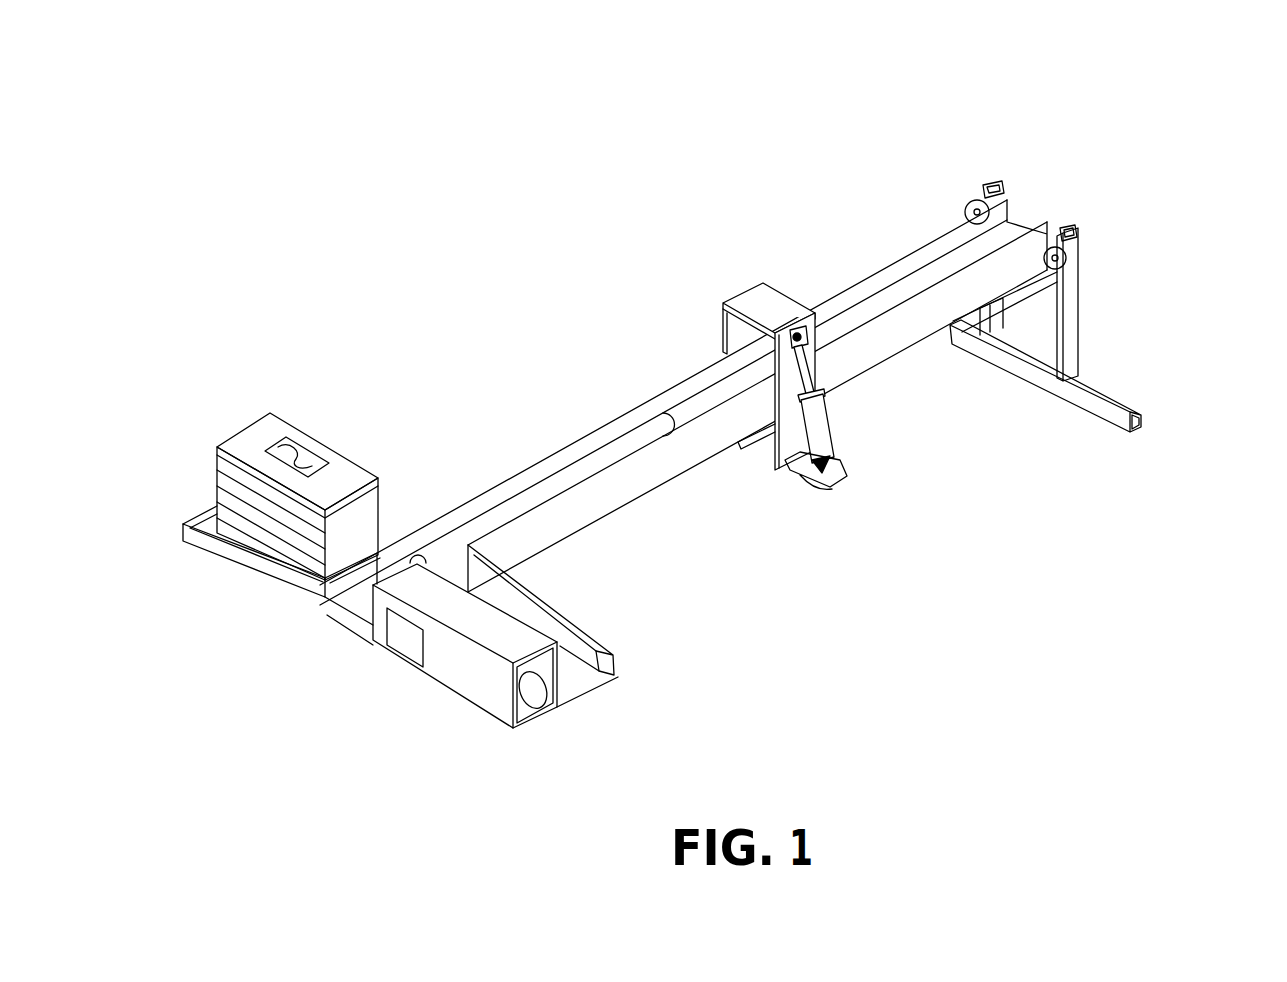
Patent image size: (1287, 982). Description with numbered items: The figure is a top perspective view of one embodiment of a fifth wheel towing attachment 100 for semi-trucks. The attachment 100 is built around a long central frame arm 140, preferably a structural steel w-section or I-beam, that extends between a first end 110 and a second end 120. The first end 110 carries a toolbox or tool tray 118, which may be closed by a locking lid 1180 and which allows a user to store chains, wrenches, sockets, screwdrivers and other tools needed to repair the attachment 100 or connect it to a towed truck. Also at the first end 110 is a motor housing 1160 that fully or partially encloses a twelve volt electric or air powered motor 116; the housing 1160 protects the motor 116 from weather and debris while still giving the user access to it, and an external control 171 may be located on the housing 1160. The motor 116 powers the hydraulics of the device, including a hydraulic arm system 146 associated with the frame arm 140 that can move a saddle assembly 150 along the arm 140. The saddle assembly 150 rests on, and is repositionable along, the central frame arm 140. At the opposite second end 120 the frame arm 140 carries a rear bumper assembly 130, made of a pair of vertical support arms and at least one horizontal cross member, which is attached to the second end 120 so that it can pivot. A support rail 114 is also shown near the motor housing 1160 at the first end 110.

The 5th wheel towing attachment 100 is at (566, 170).
The first end 110 is at (315, 648).
The support rail 114 is at (567, 660).
The motor 116 is at (537, 690).
The toolbox/tool tray 118 is at (233, 490).
The locking lid 1180 is at (270, 427).
The second end 120 is at (1032, 192).
The rear bumper assembly 130 is at (1090, 350).
The central frame arm 140 is at (623, 402).
The hydraulic arm system 146 is at (730, 388).
The saddle assembly 150 is at (840, 440).
The motor housing 1160 is at (482, 683).
The external control 171 is at (410, 635).